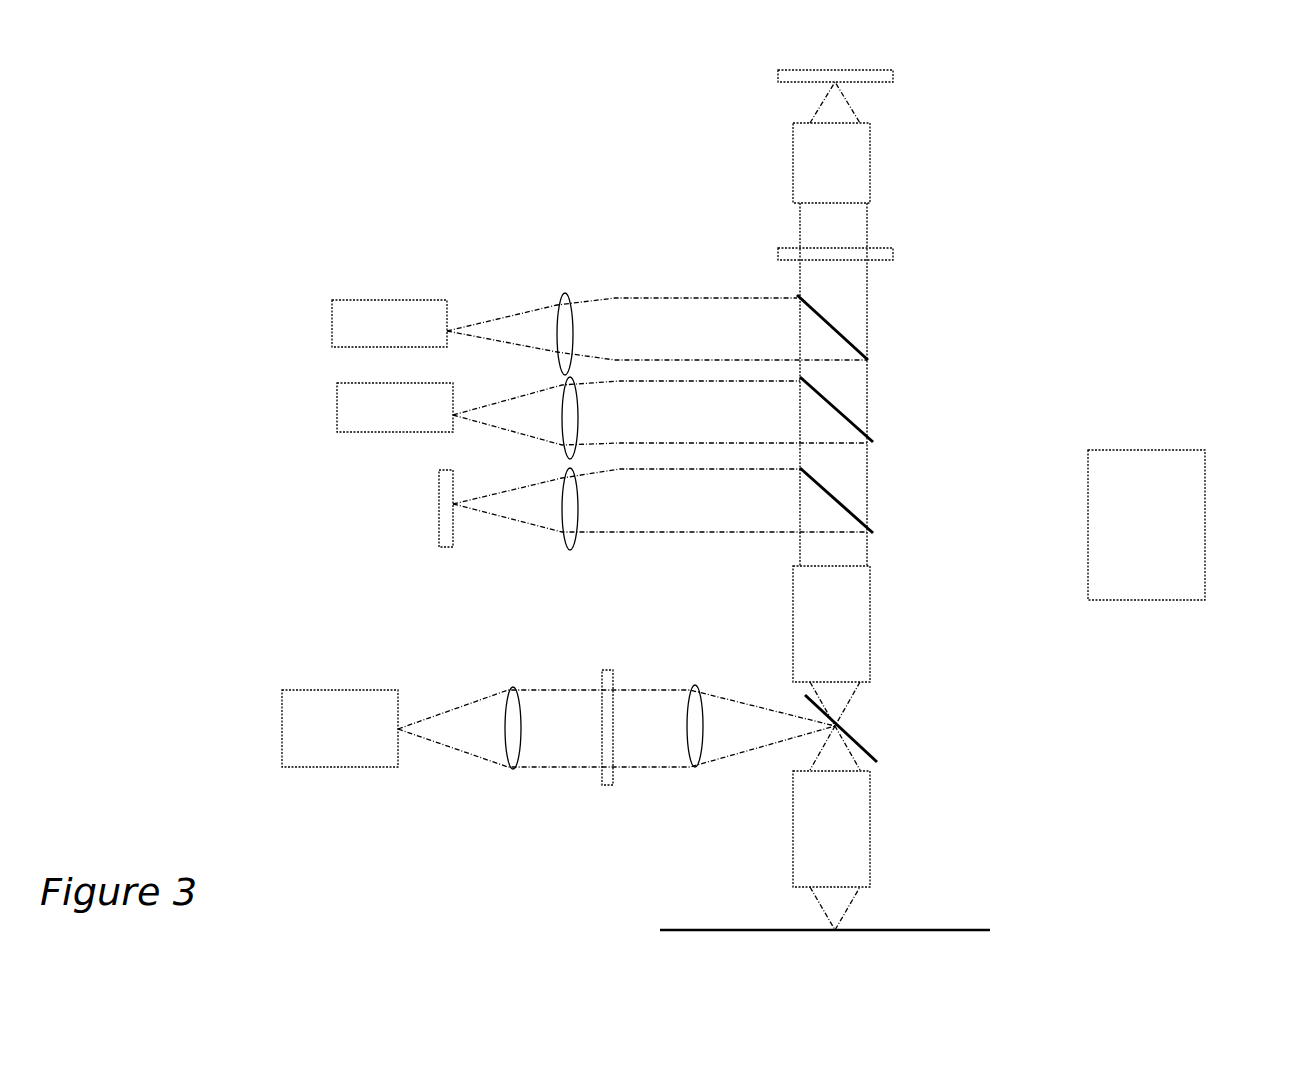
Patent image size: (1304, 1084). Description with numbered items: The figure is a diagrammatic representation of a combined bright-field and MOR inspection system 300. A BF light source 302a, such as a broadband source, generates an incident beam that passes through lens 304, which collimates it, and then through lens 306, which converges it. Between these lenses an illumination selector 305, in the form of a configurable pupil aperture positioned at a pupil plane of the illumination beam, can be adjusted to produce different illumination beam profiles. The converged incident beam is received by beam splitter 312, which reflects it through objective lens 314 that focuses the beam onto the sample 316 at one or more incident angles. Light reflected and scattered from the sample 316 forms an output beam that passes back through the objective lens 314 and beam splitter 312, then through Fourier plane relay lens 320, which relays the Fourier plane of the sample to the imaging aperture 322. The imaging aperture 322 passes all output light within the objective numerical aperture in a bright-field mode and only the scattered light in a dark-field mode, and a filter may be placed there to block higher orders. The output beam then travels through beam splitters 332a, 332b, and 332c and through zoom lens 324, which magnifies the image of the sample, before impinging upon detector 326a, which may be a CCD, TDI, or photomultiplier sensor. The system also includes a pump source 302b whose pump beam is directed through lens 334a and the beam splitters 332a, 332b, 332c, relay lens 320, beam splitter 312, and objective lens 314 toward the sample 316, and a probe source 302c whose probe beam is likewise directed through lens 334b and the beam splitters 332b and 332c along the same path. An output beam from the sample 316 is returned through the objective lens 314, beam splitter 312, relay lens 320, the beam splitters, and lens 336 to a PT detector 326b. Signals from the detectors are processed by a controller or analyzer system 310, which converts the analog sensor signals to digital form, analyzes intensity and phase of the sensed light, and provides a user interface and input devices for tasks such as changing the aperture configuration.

The inspection system 300 is at (1157, 194).
The BF light source 302a is at (332, 690).
The pump source 302b is at (403, 300).
The probe source 302c is at (385, 383).
The lens 304 is at (512, 688).
The illumination selector 305 is at (610, 670).
The lens 306 is at (695, 685).
The controller or analyzer system 310 is at (1205, 560).
The beam splitter 312 is at (850, 735).
The objective lens 314 is at (872, 822).
The sample 316 is at (973, 932).
The Fourier plane relay lens 320 is at (872, 648).
The imaging aperture 322 is at (893, 253).
The zoom lens 324 is at (872, 172).
The detector 326a is at (893, 74).
The PT detector 326b is at (439, 515).
The beam splitter 332a is at (843, 340).
The beam splitter 332b is at (848, 422).
The beam splitter 332c is at (848, 506).
The lens 334a is at (566, 294).
The lens 334b is at (564, 452).
The lens 336 is at (565, 530).